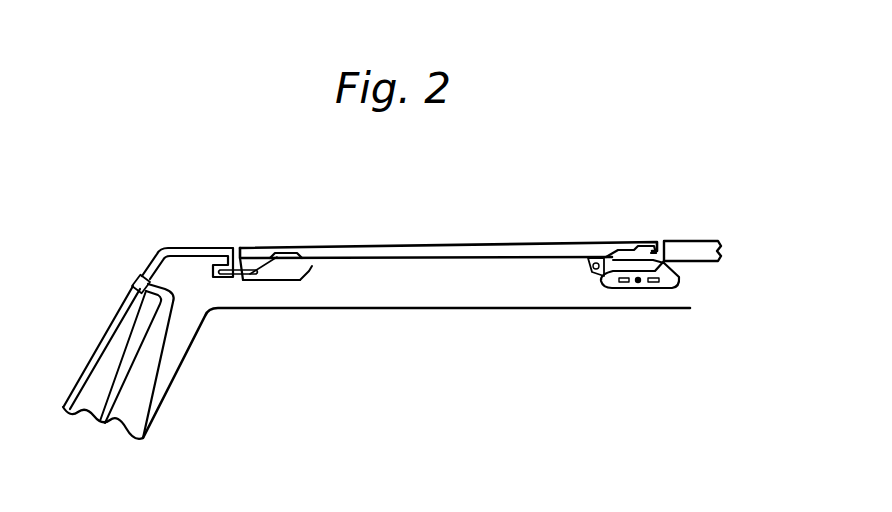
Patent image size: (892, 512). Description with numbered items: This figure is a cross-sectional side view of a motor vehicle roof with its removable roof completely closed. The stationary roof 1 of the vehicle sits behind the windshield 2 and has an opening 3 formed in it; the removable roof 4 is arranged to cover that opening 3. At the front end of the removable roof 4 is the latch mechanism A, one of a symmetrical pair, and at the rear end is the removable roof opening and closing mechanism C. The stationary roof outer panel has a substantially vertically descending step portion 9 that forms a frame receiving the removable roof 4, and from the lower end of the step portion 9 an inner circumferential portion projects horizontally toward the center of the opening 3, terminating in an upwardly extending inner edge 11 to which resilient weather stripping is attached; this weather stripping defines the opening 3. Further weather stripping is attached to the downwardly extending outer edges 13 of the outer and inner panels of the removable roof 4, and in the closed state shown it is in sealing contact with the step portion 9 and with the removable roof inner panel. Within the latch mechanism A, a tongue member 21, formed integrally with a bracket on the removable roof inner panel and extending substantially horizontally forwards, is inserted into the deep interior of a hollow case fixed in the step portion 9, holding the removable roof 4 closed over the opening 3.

The stationary roof 1 is at (688, 236).
The windshield 2 is at (101, 344).
The opening 3 is at (437, 290).
The removable roof 4 is at (469, 236).
The step portion 9 is at (238, 258).
The inner edge 11 is at (307, 266).
The outer edges 13 is at (250, 275).
The tongue member 21 is at (240, 274).
The latch mechanism A is at (227, 290).
The removable roof opening and closing mechanism C is at (638, 295).